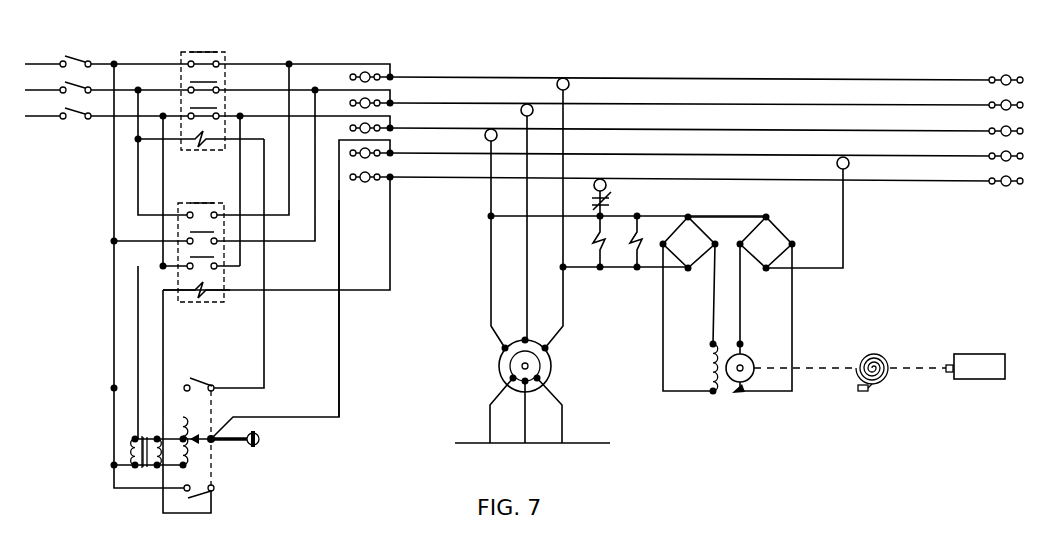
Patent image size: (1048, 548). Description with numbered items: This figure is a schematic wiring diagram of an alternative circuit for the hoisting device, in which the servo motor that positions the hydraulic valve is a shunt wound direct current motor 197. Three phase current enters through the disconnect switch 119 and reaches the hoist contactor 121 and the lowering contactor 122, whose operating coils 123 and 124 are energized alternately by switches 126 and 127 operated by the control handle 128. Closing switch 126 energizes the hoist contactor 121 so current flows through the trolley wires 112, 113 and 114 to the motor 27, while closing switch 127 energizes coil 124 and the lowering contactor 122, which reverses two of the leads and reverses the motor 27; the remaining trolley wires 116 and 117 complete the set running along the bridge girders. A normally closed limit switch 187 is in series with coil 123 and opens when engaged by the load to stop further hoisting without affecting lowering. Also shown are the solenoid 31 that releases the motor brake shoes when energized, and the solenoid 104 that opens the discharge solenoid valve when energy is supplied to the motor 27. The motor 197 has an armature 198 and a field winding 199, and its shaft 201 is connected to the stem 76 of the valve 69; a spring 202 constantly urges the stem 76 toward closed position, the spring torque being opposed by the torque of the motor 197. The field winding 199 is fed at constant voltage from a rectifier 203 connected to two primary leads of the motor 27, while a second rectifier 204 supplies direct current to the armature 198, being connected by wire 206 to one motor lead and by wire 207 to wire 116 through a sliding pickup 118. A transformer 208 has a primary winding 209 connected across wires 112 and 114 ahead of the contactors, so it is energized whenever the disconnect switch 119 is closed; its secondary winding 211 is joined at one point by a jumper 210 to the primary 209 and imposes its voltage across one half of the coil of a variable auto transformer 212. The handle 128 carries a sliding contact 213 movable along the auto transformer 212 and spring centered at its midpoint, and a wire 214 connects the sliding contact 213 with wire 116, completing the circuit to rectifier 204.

The disconnect switch 119 is at (72, 53).
The lowering contactor 122 is at (192, 51).
The coil 124 is at (206, 140).
The hoist contactor 121 is at (192, 202).
The operating coil 123 is at (210, 294).
The switch 127 is at (199, 379).
The switch 126 is at (200, 500).
The sliding contact 213 is at (207, 430).
The control handle 128 is at (229, 444).
The variable auto transformer 212 is at (188, 456).
The transformer 208 is at (135, 469).
The jumper 210 is at (142, 437).
The primary winding 209 is at (134, 452).
The secondary winding 211 is at (163, 455).
The wire 214 is at (339, 372).
The trolley wire 112 is at (660, 78).
The trolley wire 113 is at (660, 103).
The trolley wire 114 is at (660, 128).
The trolley wire 116 is at (660, 153).
The trolley wire 117 is at (660, 177).
The motor 27 is at (493, 363).
The limit switch 187 is at (604, 204).
The solenoid 31 is at (597, 242).
The solenoid 104 is at (641, 252).
The wire 206 is at (708, 217).
The rectifier 203 is at (676, 256).
The second rectifier 204 is at (776, 229).
The wire 207 is at (844, 235).
The sliding pickup 118 is at (850, 164).
The field winding 199 is at (712, 350).
The armature 198 is at (734, 359).
The shunt wound direct current motor 197 is at (744, 394).
The shaft 201 is at (799, 367).
The spring 202 is at (867, 352).
The stem 76 is at (948, 364).
The valve 69 is at (979, 366).